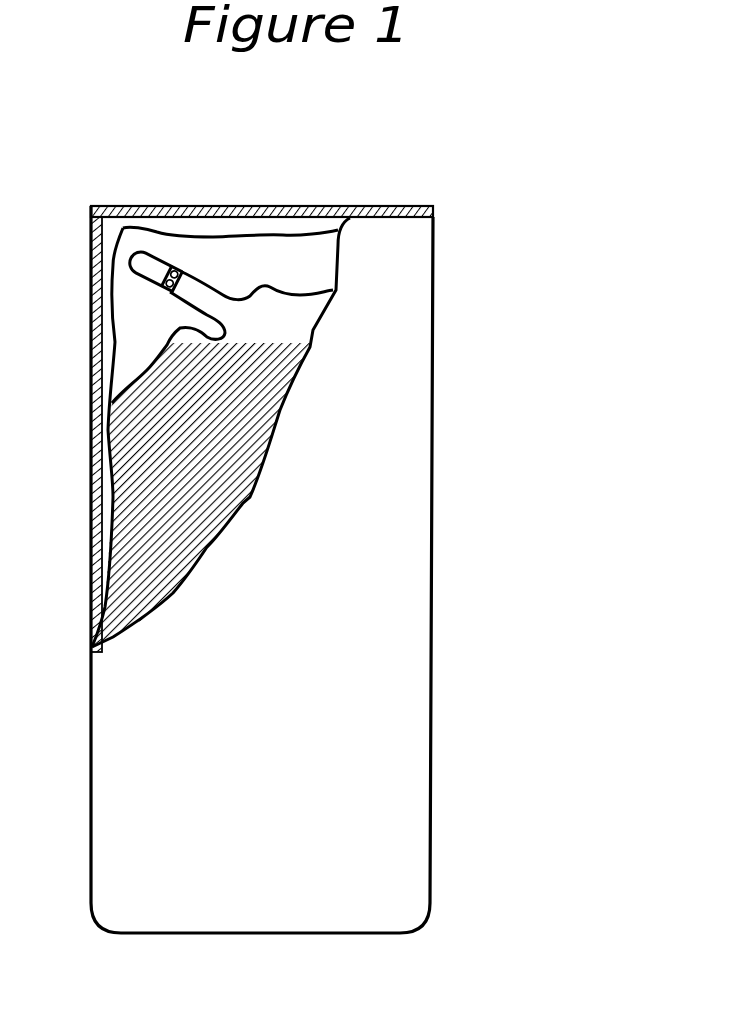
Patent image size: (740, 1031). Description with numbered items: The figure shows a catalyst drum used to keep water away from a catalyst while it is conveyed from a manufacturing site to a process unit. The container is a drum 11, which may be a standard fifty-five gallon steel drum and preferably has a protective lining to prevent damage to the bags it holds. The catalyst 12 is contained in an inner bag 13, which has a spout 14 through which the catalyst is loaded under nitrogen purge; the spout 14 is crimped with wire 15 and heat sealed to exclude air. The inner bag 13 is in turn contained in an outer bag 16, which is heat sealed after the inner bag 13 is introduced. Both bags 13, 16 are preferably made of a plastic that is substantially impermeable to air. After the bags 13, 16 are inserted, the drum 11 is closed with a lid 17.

The drum 11 is at (436, 604).
The catalyst 12 is at (190, 500).
The inner bag 13 is at (290, 295).
The spout 14 is at (134, 269).
The wire 15 is at (163, 293).
The outer bag 16 is at (282, 237).
The lid 17 is at (433, 211).